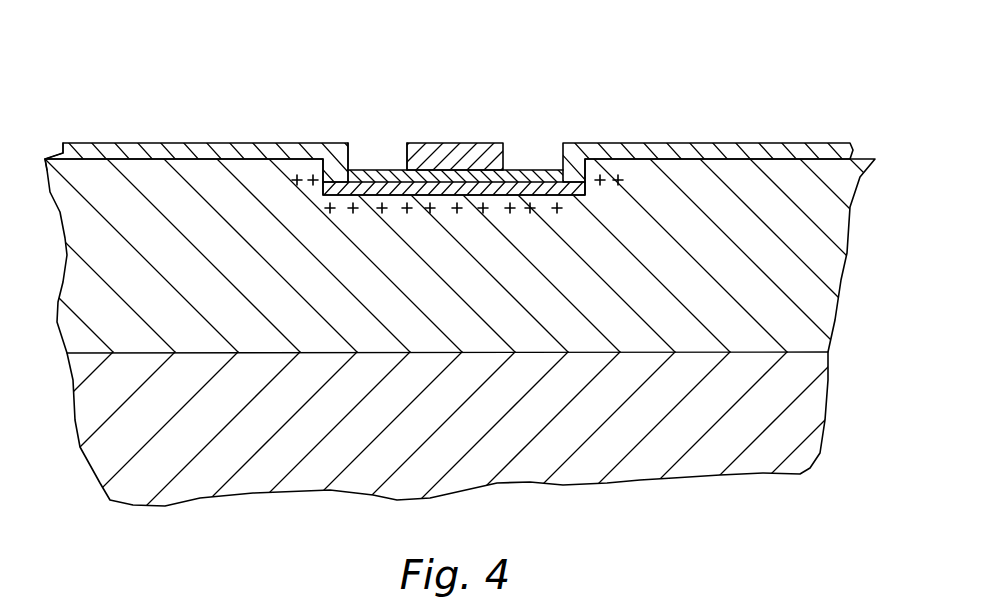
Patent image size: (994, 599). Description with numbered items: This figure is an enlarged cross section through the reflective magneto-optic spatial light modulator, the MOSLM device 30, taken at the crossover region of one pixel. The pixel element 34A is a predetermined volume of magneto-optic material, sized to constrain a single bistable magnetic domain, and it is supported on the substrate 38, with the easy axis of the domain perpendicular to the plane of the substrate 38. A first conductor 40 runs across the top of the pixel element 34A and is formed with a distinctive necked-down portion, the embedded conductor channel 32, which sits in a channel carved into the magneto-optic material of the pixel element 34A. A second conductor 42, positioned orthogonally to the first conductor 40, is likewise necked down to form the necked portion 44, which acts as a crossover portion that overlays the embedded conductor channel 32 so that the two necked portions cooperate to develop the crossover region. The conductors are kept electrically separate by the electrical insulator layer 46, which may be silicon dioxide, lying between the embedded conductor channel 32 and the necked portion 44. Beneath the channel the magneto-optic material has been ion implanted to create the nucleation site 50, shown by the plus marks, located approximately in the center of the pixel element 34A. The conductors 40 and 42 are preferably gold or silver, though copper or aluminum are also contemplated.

The MOSLM device 30 is at (628, 110).
The embedded conductor channel 32 is at (351, 152).
The pixel element 34A is at (46, 180).
The substrate 38 is at (630, 472).
The first conductor 40 is at (665, 143).
The second conductor 42 is at (405, 150).
The necked portion 44 is at (462, 143).
The electrical insulator layer 46 is at (527, 170).
The nucleation site 50 is at (323, 220).